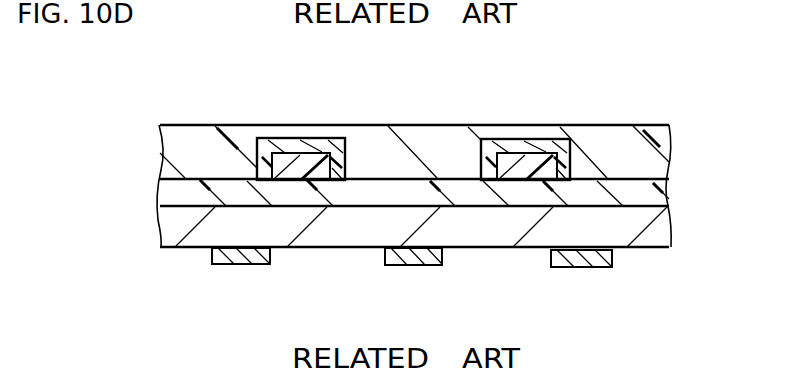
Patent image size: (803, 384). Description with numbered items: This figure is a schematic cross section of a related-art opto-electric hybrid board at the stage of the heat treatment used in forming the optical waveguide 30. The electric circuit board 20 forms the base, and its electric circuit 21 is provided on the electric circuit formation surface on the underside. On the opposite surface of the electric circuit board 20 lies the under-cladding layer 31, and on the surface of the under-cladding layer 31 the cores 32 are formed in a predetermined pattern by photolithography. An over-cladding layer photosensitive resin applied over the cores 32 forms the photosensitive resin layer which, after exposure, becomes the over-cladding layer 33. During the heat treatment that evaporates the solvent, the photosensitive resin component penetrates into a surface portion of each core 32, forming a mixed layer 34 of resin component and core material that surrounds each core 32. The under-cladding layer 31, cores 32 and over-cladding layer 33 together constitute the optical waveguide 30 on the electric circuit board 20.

The electric circuit board 20 is at (137, 205).
The electric circuit 21 is at (393, 266).
The optical waveguide 30 is at (690, 130).
The under-cladding layer 31 is at (173, 192).
The core 32 is at (299, 160).
The over-cladding layer 33 is at (186, 140).
The mixed layer 34 is at (320, 148).